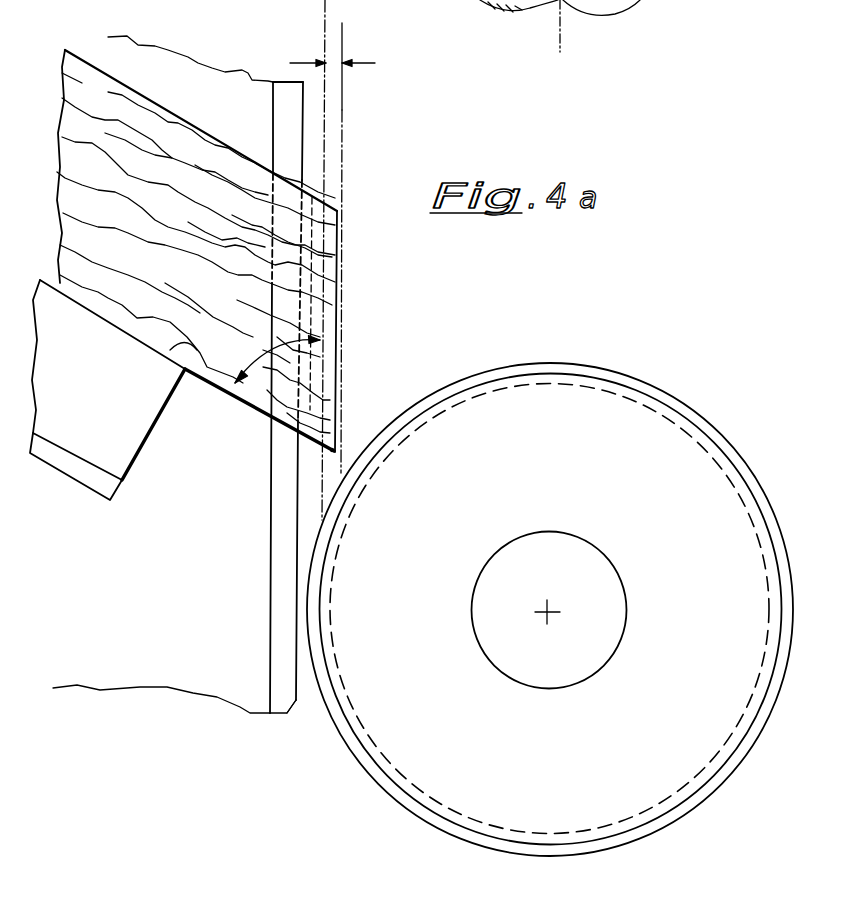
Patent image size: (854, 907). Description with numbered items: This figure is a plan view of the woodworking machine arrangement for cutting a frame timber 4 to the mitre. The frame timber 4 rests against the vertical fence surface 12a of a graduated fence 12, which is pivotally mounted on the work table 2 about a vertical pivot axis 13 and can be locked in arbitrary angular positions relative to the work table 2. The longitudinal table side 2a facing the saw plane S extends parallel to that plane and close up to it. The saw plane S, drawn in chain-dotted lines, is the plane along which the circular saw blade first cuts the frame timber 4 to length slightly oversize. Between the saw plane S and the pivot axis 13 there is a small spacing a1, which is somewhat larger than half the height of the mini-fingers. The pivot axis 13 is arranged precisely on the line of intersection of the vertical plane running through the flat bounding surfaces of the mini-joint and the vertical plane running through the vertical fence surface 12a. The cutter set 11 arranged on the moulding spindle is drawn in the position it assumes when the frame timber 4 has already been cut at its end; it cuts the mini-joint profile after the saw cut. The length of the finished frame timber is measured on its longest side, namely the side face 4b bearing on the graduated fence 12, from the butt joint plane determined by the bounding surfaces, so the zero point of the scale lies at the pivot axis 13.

The work table 2 is at (205, 668).
The longitudinal table side 2a is at (293, 692).
The frame timber 4 is at (185, 143).
The side face of the frame timber 4b is at (248, 407).
The cutter set 11 is at (627, 437).
The graduated fence 12 is at (98, 443).
The vertical fence surface 12a is at (198, 377).
The pivot axis 13 is at (331, 449).
The axis of saw blade A is at (566, 610).
The saw blade plane S is at (340, 97).
The spacing a1 is at (342, 23).